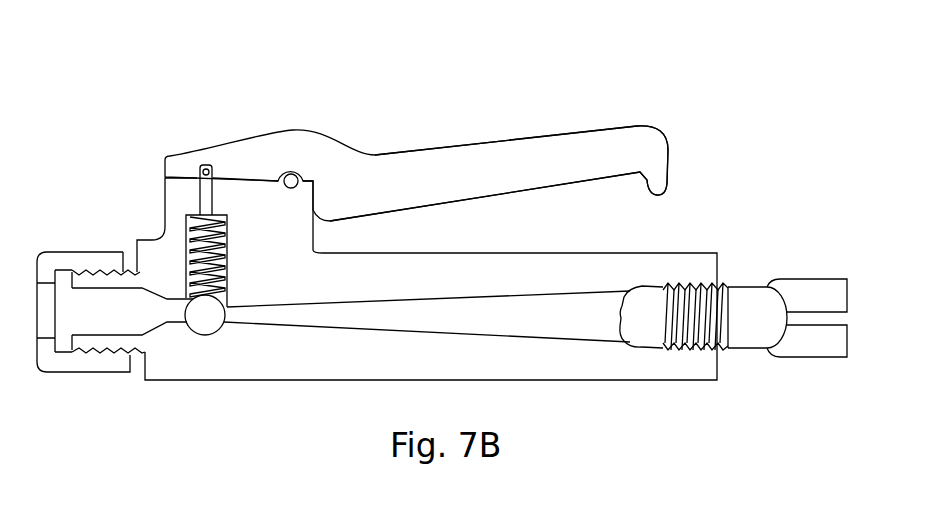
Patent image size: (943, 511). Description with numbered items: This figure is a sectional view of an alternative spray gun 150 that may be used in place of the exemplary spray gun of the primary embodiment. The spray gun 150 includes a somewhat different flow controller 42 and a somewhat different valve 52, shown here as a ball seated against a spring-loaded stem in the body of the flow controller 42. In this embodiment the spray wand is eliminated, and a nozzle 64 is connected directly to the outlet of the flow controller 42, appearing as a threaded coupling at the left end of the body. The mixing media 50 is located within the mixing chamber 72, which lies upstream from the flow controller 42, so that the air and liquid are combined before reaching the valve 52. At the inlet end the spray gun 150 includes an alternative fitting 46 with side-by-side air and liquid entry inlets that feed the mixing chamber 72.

The flow controller 42 is at (205, 147).
The spray gun 150 is at (432, 148).
The valve 52 is at (193, 296).
The nozzle 64 is at (70, 373).
The mixing chamber 72 is at (523, 315).
The mixing media 50 is at (630, 342).
The fitting 46 is at (810, 278).